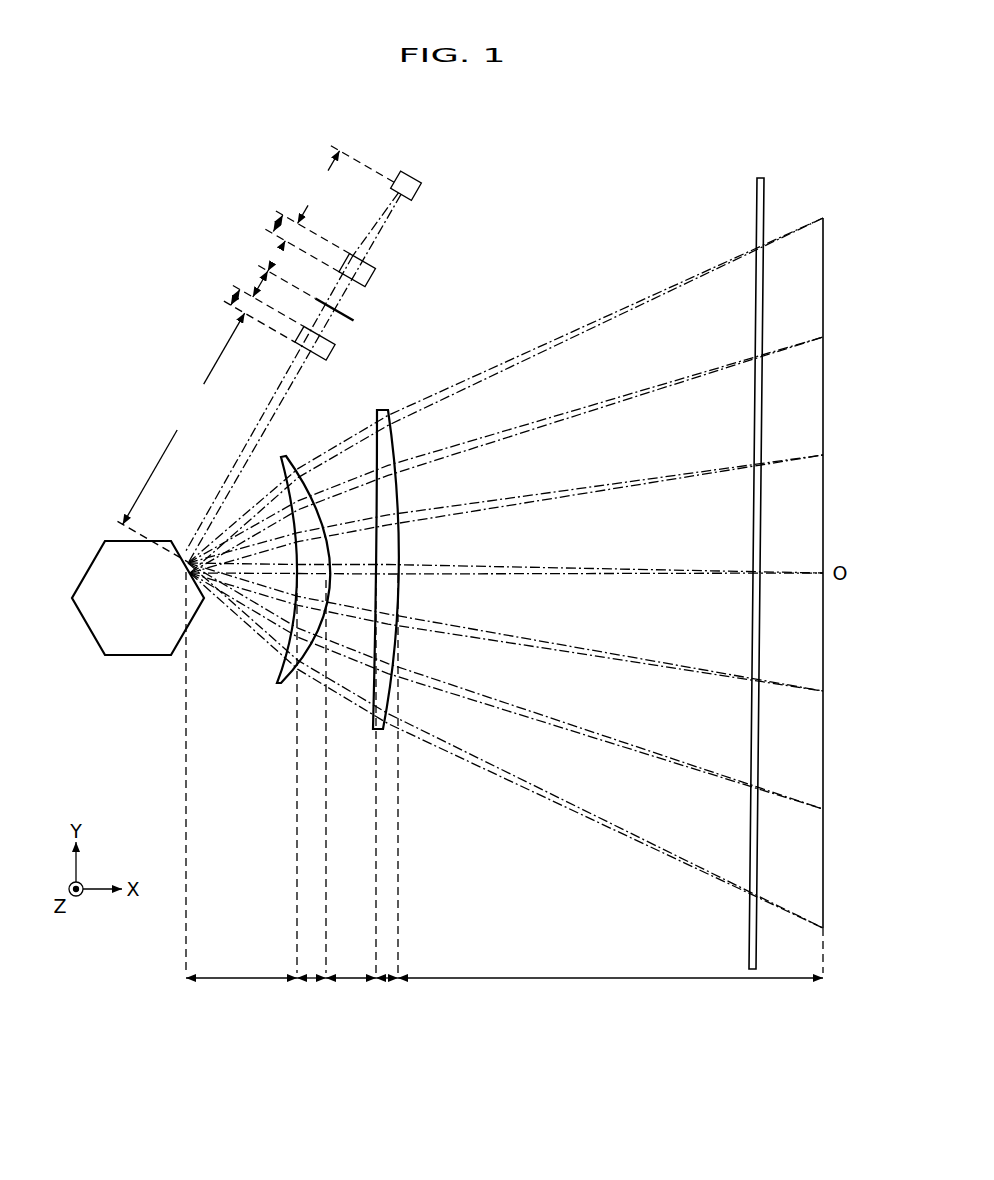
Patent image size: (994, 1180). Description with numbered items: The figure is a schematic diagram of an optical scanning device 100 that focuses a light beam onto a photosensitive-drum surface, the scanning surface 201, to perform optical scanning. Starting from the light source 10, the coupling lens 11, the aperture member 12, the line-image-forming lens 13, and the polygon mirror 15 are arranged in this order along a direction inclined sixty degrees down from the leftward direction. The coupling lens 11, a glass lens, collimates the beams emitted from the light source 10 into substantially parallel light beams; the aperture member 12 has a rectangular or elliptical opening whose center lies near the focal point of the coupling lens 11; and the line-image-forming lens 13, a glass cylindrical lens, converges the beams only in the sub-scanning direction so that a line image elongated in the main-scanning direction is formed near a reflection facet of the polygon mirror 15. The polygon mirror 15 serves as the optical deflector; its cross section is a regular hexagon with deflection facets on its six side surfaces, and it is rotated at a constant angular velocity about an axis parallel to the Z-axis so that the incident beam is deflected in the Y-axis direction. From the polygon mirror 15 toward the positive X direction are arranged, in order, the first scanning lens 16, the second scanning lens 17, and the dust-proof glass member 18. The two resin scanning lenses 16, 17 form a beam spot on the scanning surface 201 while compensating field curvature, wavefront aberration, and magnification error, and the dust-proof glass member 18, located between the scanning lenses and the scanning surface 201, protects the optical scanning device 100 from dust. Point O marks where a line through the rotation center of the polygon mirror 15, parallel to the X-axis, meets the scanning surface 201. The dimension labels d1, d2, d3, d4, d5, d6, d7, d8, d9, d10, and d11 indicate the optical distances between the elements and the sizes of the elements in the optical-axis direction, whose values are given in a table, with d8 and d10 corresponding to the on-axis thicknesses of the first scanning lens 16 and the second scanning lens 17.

The light source 10 is at (411, 196).
The coupling lens 11 is at (368, 283).
The aperture member 12 is at (355, 321).
The line-image-forming lens 13 is at (329, 357).
The polygon mirror 15 is at (101, 538).
The first scanning lens 16 is at (286, 456).
The second scanning lens 17 is at (384, 409).
The dust-proof glass member 18 is at (757, 198).
The optical scanning device 100 is at (576, 192).
The scanning surface 201 is at (822, 302).
The optical distance d1 is at (319, 187).
The optical distance d2 is at (278, 222).
The optical distance d3 is at (277, 256).
The optical distance d4 is at (259, 282).
The optical distance d5 is at (235, 297).
The optical distance d6 is at (184, 418).
The optical distance d7 is at (241, 966).
The optical distance d8 is at (311, 966).
The optical distance d9 is at (351, 966).
The optical distance d10 is at (384, 980).
The optical distance d11 is at (610, 966).